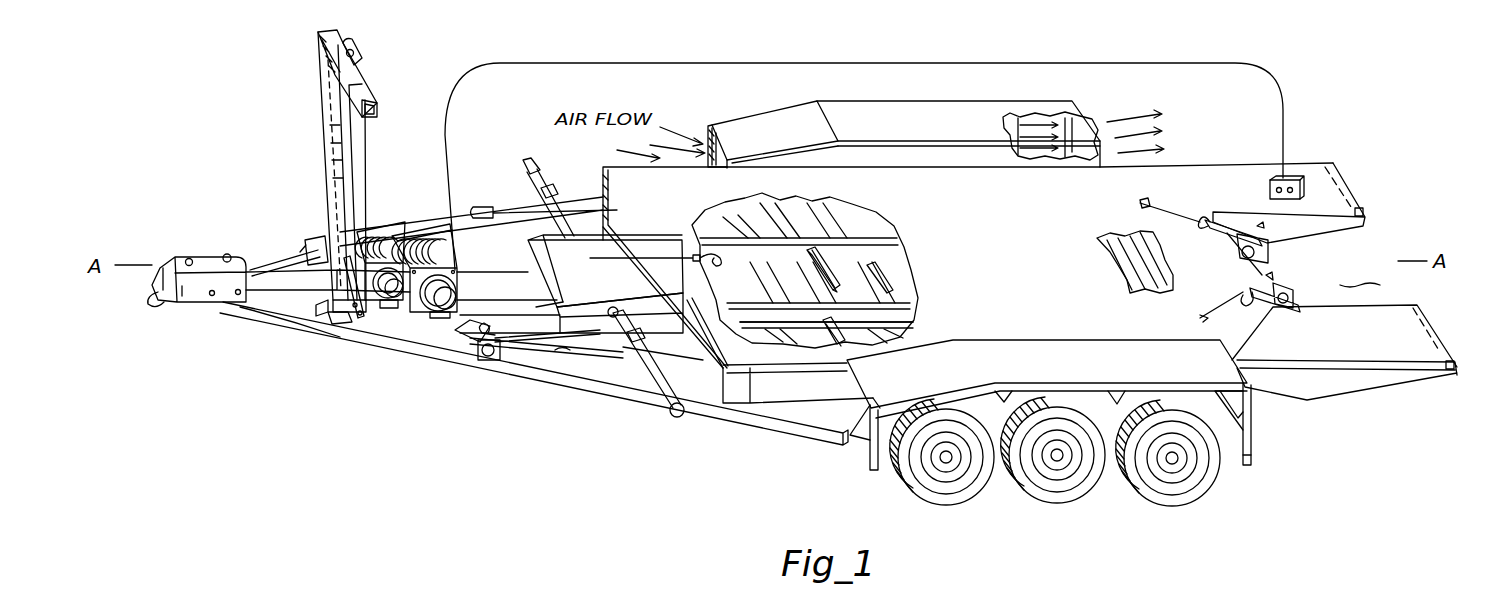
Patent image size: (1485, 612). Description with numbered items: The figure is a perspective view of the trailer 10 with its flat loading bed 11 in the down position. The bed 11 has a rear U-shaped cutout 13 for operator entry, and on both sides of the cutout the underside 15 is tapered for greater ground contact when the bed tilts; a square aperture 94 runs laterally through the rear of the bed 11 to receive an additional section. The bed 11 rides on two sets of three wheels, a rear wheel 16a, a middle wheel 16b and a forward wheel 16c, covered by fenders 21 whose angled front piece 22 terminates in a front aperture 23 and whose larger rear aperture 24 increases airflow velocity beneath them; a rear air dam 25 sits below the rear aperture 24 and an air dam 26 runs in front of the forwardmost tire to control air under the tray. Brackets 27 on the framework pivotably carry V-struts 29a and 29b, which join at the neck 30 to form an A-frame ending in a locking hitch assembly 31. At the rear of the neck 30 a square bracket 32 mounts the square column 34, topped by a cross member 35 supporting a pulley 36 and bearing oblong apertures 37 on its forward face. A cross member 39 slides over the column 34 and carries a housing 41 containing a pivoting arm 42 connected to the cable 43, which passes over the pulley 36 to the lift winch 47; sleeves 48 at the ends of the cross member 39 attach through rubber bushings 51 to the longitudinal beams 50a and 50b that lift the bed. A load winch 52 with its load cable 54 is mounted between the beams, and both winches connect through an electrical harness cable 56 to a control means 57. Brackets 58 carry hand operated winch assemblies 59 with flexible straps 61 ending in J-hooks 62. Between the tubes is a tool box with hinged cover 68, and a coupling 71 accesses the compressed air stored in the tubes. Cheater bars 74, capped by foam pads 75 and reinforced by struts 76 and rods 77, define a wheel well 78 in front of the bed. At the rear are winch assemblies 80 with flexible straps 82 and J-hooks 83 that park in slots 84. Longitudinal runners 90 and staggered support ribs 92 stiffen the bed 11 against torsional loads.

The trailer 10 is at (710, 437).
The loading bed 11 is at (968, 265).
The rear U-shaped cutout 13 is at (1360, 275).
The tapered underside 15 is at (1413, 385).
The rear wheel 16a is at (962, 503).
The middle wheel 16b is at (1072, 501).
The forward wheel 16c is at (1186, 504).
The fender 21 is at (887, 106).
The angled front piece 22 is at (763, 127).
The front aperture 23 is at (708, 130).
The rear aperture 24 is at (1092, 120).
The rear air dam 25 is at (1104, 240).
The air dam 26 is at (853, 438).
The bracket 27 is at (838, 405).
The V-strut 29a is at (763, 425).
The V-strut 29b is at (575, 198).
The neck 30 is at (262, 278).
The locking hitch assembly 31 is at (211, 255).
The square bracket 32 is at (322, 313).
The square column 34 is at (350, 170).
The cross member 35 is at (328, 66).
The pulley 36 is at (358, 58).
The oblong aperture 37 is at (330, 160).
The cross member 39 is at (358, 320).
The housing 41 is at (293, 268).
The arm 42 is at (308, 245).
The cable 43 is at (362, 140).
The lift winch 47 is at (392, 300).
The sleeve 48 is at (328, 315).
The longitudinal beam 50a is at (518, 305).
The longitudinal beam 50b is at (478, 213).
The rubber bushing 51 is at (345, 324).
The load winch 52 is at (441, 312).
The load cable 54 is at (693, 257).
The electrical harness cable 56 is at (850, 63).
The control means 57 is at (1270, 190).
The bracket 58 is at (473, 350).
The hand operated winch assembly 59 is at (492, 362).
The flexible strap 61 is at (523, 342).
The J-hook 62 is at (608, 365).
The hinged cover 68 is at (605, 284).
The coupling 71 is at (540, 320).
The cheater bar 74 is at (655, 392).
The protective foam pad 75 is at (672, 417).
The strut 76 is at (643, 340).
The rod 77 is at (694, 300).
The wheel well 78 is at (642, 328).
The winch assembly 80 is at (1270, 244).
The flexible strap 82 is at (1210, 218).
The J-hook 83 is at (1160, 203).
The slot 84 is at (1205, 316).
The longitudinal runner 90 is at (795, 262).
The support rib 92 is at (853, 278).
The square aperture 94 is at (1418, 306).